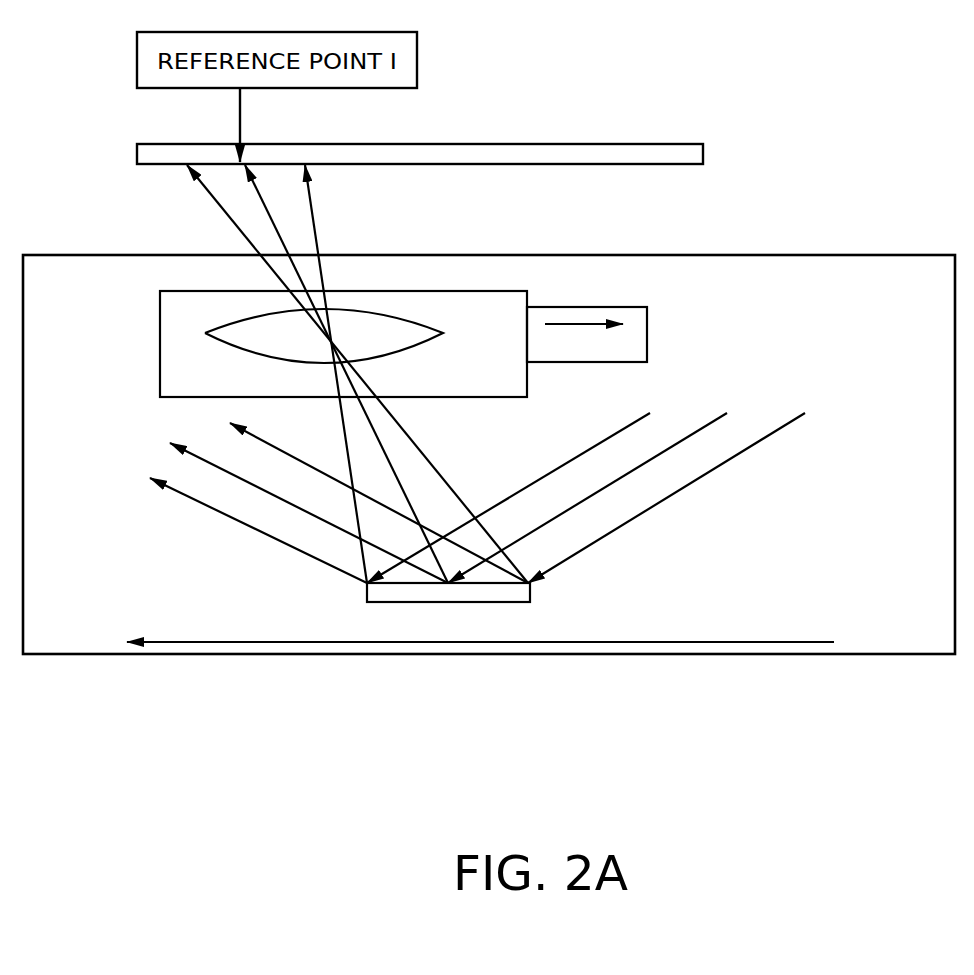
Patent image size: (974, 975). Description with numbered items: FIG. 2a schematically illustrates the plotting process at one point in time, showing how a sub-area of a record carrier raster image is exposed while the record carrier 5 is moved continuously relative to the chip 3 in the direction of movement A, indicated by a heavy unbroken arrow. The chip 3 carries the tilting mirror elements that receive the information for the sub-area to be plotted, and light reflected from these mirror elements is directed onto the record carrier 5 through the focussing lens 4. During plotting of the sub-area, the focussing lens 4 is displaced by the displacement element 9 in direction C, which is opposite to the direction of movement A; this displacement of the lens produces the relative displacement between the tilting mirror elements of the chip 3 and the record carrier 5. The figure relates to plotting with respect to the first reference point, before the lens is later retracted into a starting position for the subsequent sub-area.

The chip 3 is at (530, 597).
The focussing lens 4 is at (228, 337).
The record carrier 5 is at (670, 148).
The displacement element 9 is at (647, 356).
The direction of movement A is at (617, 716).
The direction C is at (600, 322).